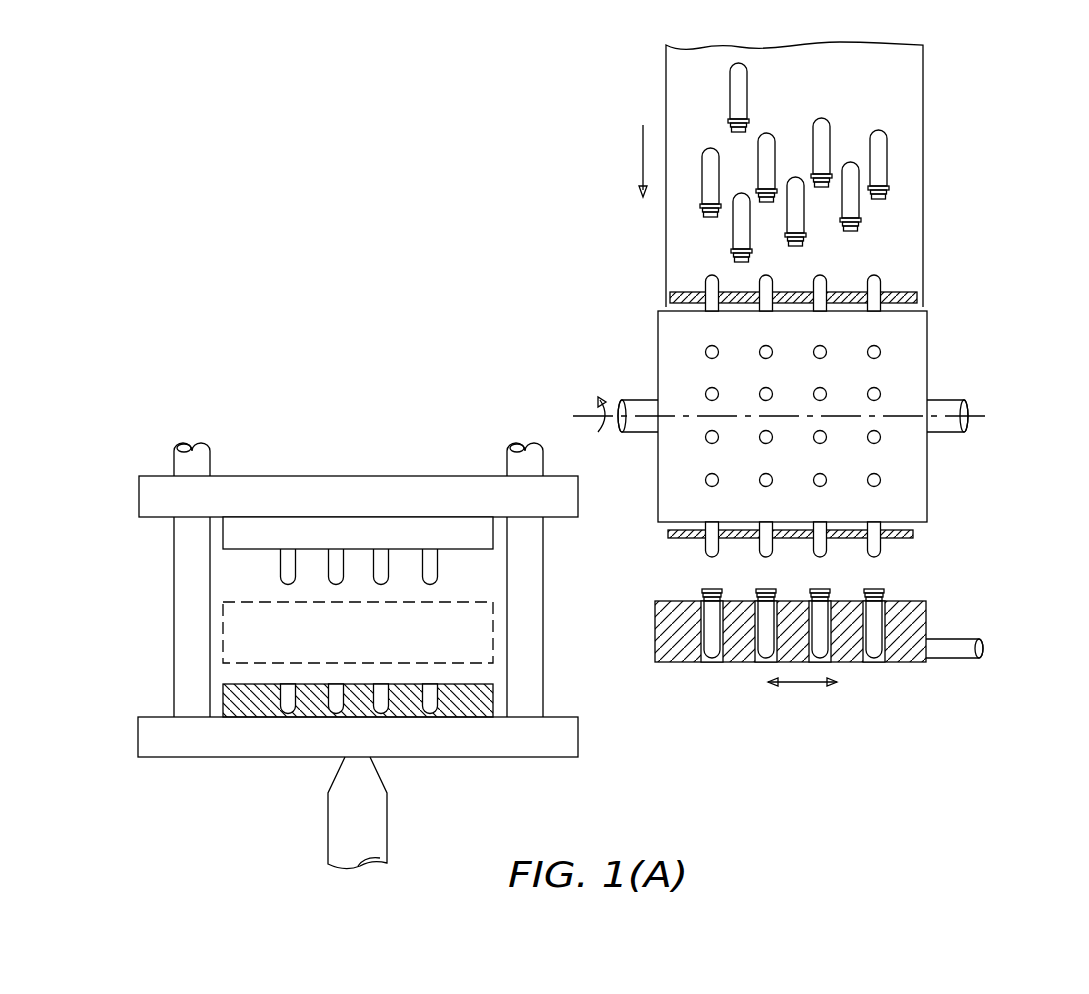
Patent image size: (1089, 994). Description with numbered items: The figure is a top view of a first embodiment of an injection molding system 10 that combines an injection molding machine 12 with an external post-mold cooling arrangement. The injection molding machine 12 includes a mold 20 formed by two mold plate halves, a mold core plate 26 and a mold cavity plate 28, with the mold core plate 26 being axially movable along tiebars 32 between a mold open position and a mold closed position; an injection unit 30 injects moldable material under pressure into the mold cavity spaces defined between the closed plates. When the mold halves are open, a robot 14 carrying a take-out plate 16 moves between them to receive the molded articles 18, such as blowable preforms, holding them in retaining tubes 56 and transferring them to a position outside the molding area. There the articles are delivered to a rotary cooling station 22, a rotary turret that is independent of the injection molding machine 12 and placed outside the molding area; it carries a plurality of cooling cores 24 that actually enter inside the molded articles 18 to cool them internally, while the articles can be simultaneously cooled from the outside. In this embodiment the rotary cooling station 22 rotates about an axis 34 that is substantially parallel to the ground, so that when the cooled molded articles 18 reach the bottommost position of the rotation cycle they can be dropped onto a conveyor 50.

The injection molding system 10 is at (146, 773).
The injection molding machine 12 is at (172, 621).
The robot 14 is at (918, 680).
The take-out plate 16 is at (740, 662).
The molded articles 18 is at (708, 588).
The mold 20 is at (488, 584).
The rotary cooling station 22 is at (658, 326).
The cooling cores 24 is at (706, 392).
The mold core plate 26 is at (322, 530).
The mold cavity plate 28 is at (500, 690).
The injection unit 30 is at (368, 822).
The tiebars 32 is at (182, 443).
The axis 34 is at (590, 412).
The conveyor 50 is at (666, 78).
The retaining tubes 56 is at (704, 662).